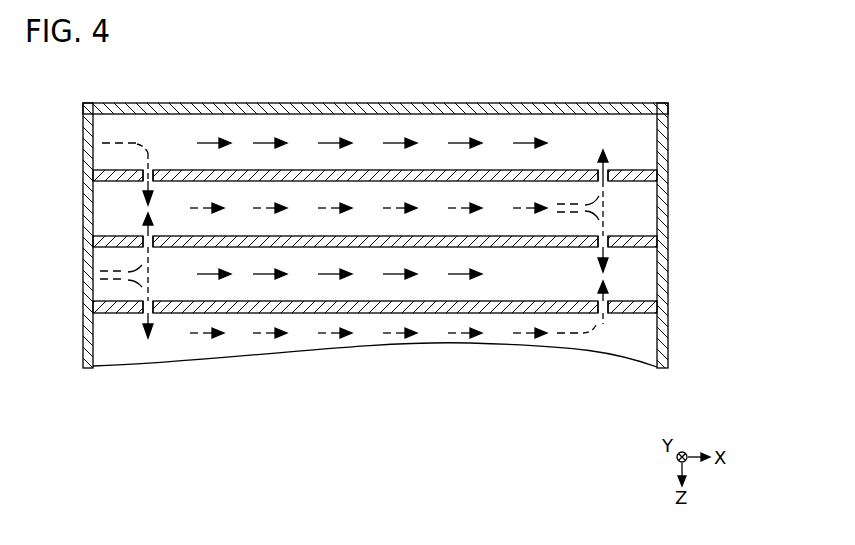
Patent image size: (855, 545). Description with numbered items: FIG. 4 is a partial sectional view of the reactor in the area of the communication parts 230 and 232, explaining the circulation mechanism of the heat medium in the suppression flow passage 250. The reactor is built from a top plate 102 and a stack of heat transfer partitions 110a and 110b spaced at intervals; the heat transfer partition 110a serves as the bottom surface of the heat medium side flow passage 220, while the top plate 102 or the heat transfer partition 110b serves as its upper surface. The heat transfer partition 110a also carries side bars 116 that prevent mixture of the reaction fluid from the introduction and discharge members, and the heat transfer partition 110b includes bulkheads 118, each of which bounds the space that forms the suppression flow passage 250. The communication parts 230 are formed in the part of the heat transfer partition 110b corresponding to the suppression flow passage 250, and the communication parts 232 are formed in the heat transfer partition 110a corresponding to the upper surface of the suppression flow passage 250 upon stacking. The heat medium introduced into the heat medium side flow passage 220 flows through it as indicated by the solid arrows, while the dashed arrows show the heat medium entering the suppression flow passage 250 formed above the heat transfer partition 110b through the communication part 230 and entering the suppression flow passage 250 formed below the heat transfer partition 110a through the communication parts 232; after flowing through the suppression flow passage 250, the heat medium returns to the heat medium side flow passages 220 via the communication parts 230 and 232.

The top plate 102 is at (668, 108).
The heat transfer partition 110a is at (668, 175).
The heat transfer partition 110b is at (668, 241).
The side bar 116 is at (668, 141).
The bulkhead 118 is at (668, 208).
The heat medium side flow passage 220 is at (652, 154).
The suppression flow passage 250 is at (652, 221).
The communication part 230 is at (143, 238).
The communication part 232 is at (151, 171).